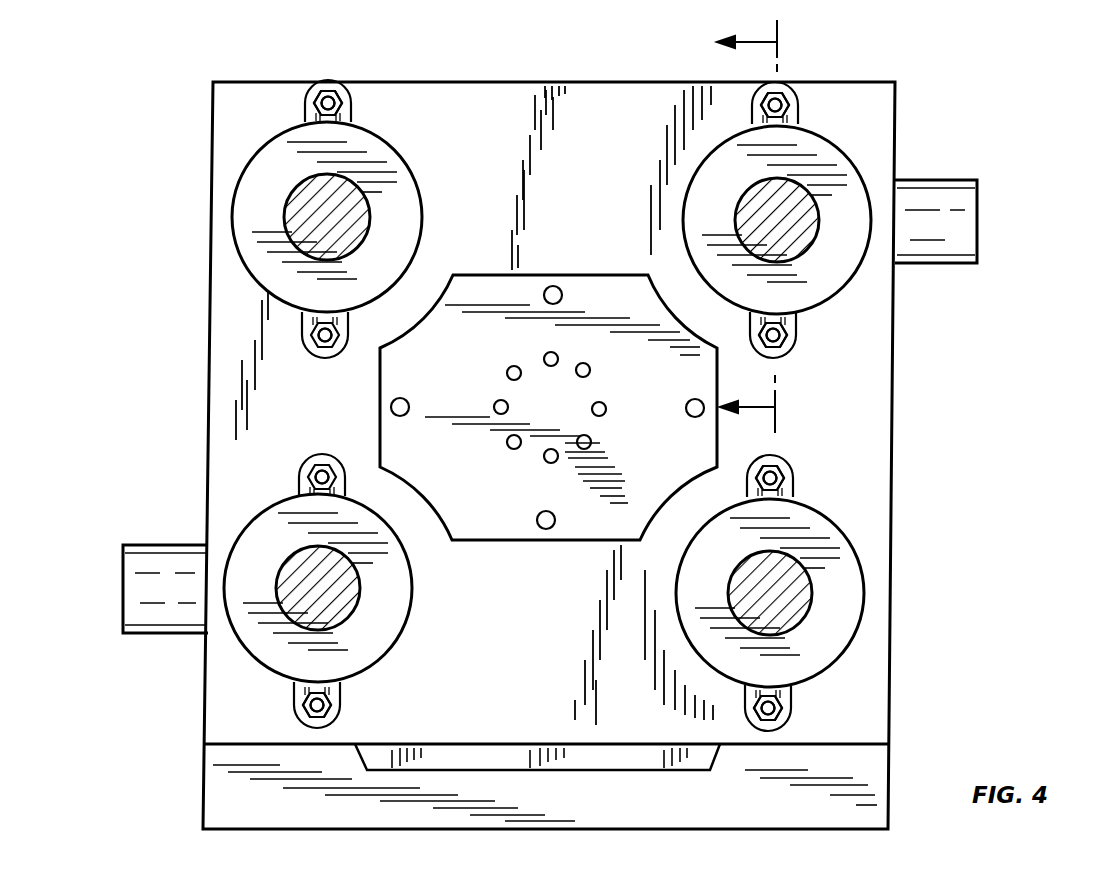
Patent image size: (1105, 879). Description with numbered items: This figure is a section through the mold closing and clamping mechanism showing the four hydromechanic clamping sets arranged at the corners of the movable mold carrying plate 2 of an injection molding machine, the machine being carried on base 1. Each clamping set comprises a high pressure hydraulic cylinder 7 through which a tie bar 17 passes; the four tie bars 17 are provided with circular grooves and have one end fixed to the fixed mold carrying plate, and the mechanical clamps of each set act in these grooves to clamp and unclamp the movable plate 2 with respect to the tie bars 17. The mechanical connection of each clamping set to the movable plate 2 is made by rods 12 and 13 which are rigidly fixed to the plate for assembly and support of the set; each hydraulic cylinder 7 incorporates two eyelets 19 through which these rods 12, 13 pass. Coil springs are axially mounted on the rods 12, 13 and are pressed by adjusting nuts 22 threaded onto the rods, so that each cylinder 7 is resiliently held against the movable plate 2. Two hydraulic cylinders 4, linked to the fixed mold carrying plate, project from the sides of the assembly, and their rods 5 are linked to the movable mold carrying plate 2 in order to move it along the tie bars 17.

The base 1 is at (870, 823).
The movable mold carrying plate 2 is at (530, 98).
The hydraulic cylinder 4 is at (963, 225).
The rod 5 is at (743, 226).
The high pressure hydraulic cylinder 7 is at (278, 160).
The rod 12 is at (337, 85).
The rod 13 is at (800, 318).
The tie bar 17 is at (290, 220).
The eyelet 19 is at (306, 100).
The adjusting nut 22 is at (331, 90).